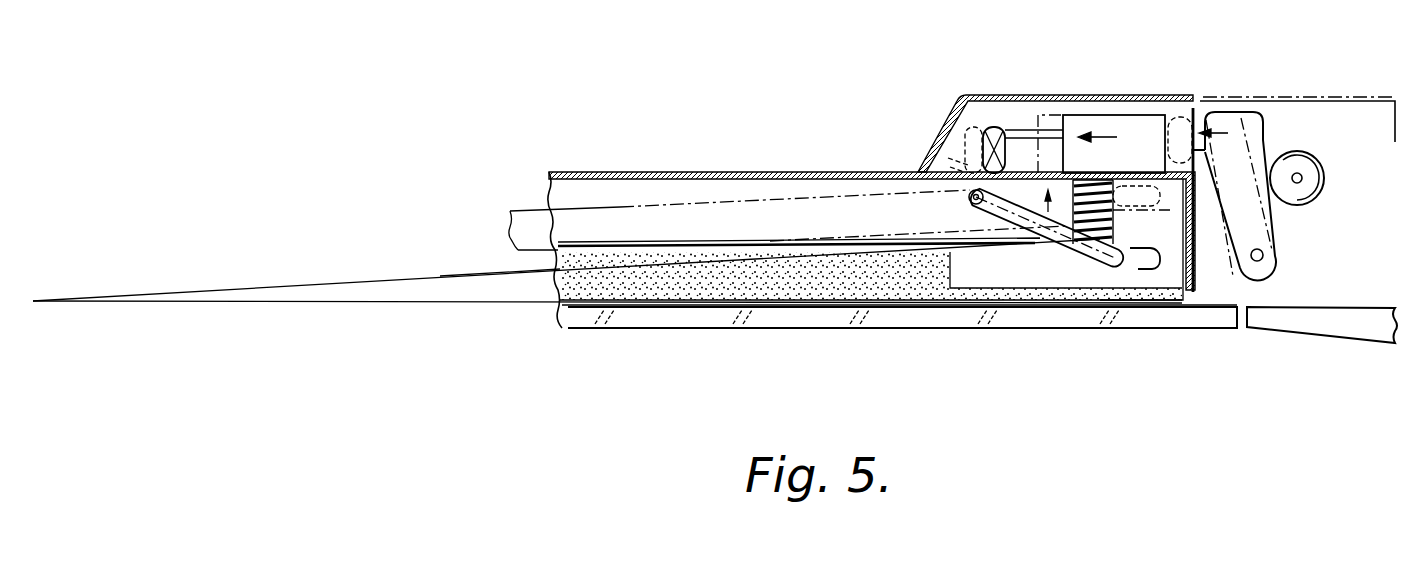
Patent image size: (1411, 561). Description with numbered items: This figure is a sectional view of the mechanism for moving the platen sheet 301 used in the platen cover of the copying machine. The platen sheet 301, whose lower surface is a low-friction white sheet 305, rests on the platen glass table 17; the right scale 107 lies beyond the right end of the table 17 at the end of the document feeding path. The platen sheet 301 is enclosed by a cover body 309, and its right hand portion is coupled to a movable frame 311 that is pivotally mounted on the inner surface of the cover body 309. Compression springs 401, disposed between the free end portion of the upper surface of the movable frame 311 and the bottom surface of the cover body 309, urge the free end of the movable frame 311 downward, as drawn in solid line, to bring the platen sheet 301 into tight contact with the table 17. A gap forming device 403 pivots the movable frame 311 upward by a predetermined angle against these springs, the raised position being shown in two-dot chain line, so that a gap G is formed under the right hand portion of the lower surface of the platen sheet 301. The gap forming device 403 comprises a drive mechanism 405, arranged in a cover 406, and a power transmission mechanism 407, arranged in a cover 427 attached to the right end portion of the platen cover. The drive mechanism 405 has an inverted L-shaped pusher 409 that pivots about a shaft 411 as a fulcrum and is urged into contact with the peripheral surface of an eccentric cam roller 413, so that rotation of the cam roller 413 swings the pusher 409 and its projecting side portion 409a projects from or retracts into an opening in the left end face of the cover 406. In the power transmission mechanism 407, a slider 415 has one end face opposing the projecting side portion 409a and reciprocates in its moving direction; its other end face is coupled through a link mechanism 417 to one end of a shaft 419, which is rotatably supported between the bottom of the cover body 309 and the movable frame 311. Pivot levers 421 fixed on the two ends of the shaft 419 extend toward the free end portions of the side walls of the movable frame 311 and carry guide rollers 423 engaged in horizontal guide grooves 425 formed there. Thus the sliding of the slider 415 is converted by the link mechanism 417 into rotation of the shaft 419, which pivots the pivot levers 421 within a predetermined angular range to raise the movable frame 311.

The platen glass table 17 is at (653, 318).
The right scale 107 is at (1318, 322).
The platen sheet 301 is at (830, 286).
The white sheet 305 is at (772, 307).
The cover body 309 is at (738, 172).
The movable frame 311 is at (937, 228).
The compression springs 401 is at (1062, 232).
The gap forming device 403 is at (1098, 123).
The drive mechanism 405 is at (1280, 228).
The cover 406 is at (1327, 97).
The power transmission mechanism 407 is at (1020, 110).
The inverted L-shaped pusher 409 is at (1240, 140).
The projecting side portion 409a is at (1207, 106).
The shaft 411 is at (1264, 257).
The eccentric cam roller 413 is at (1326, 178).
The slider 415 is at (1125, 118).
The link mechanism 417 is at (1007, 127).
The shaft 419 is at (945, 160).
The pivot levers 421 is at (977, 272).
The guide rollers 423 is at (1115, 275).
The horizontal guide grooves 425 is at (1147, 263).
The cover 427 is at (1070, 93).
The gap G is at (505, 288).